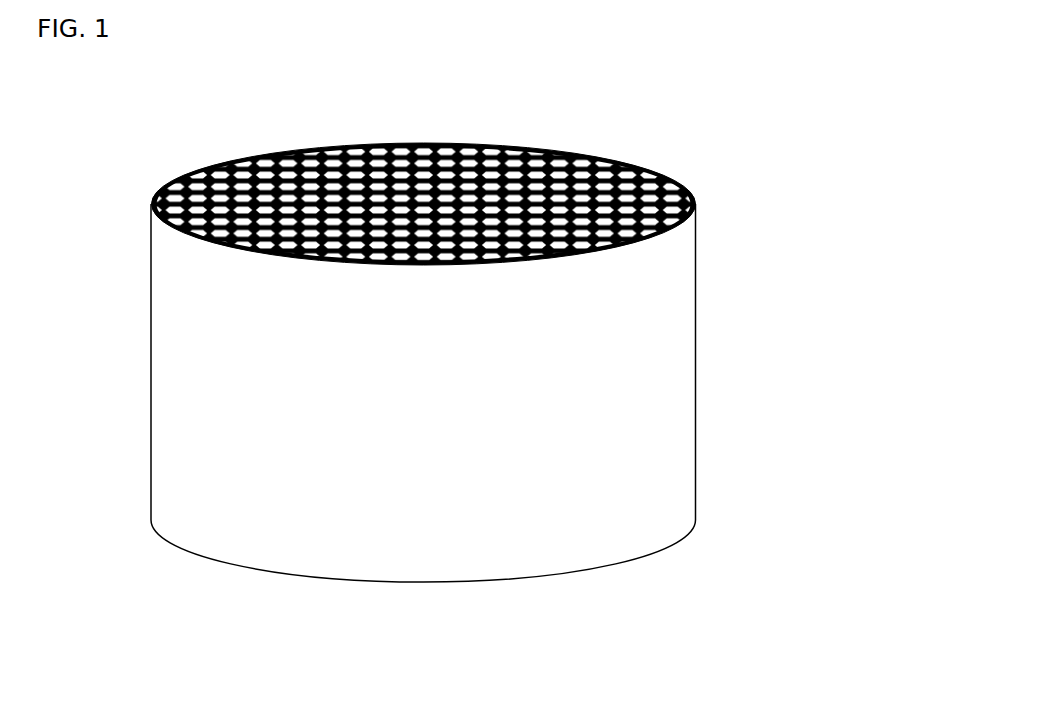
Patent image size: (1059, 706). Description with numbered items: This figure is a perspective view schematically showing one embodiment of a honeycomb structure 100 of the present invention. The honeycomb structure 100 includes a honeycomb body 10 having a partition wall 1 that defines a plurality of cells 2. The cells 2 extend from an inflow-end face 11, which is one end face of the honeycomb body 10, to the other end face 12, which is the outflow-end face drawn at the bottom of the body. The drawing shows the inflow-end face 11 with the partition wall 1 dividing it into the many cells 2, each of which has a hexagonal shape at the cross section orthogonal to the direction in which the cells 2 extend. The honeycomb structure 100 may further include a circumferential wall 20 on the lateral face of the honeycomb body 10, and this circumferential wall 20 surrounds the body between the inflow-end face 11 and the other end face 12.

The honeycomb structure 100 is at (781, 114).
The honeycomb body 10 is at (696, 263).
The inflow-end face 11 is at (567, 150).
The second end face 12 is at (407, 583).
The circumferential wall 20 is at (667, 397).
The partition wall 1 is at (425, 128).
The cell 2 is at (333, 126).